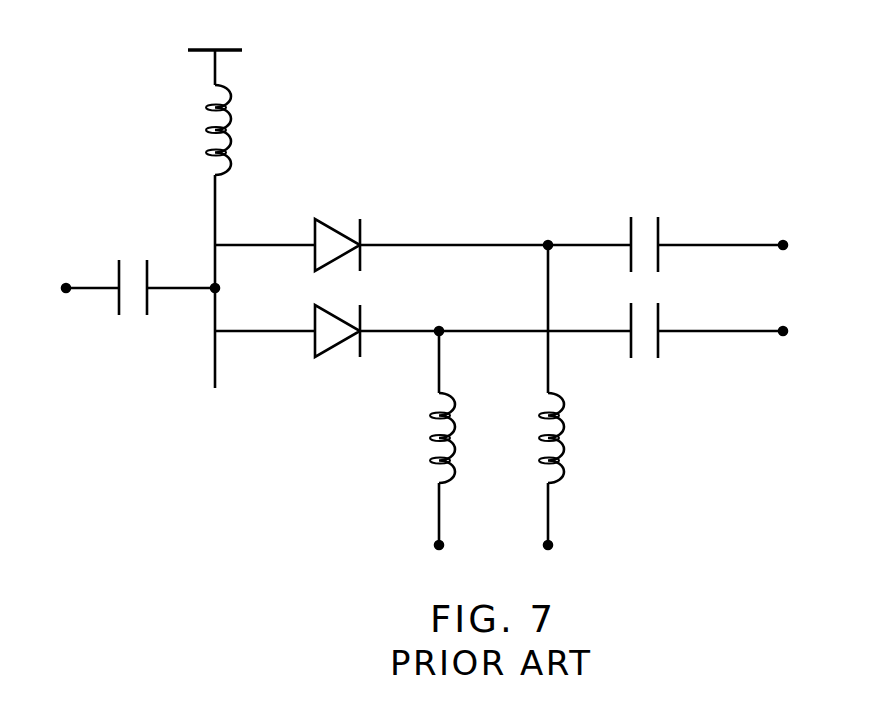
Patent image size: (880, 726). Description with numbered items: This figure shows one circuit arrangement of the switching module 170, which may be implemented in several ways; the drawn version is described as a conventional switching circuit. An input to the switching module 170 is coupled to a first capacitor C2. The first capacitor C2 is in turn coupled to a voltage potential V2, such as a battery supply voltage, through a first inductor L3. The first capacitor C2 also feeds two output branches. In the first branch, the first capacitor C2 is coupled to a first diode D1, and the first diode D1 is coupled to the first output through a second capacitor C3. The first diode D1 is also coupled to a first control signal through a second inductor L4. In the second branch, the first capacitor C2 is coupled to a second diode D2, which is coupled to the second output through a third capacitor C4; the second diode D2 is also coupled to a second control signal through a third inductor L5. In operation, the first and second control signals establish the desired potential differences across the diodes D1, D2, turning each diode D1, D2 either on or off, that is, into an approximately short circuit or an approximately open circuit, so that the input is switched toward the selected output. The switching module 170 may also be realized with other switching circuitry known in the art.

The switching module 170 is at (727, 138).
The voltage potential V2 is at (215, 49).
The first inductor L3 is at (236, 130).
The first capacitor C2 is at (153, 276).
The first diode D1 is at (359, 232).
The second diode D2 is at (359, 320).
The second capacitor C3 is at (665, 232).
The third capacitor C4 is at (665, 325).
The second inductor L4 is at (571, 438).
The third inductor L5 is at (461, 438).